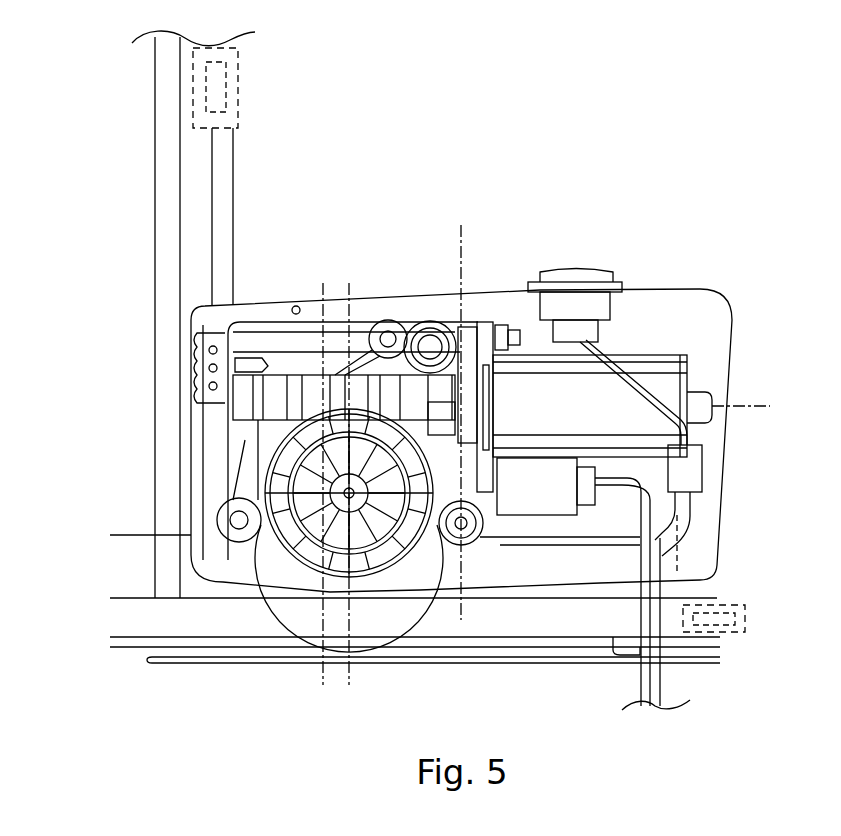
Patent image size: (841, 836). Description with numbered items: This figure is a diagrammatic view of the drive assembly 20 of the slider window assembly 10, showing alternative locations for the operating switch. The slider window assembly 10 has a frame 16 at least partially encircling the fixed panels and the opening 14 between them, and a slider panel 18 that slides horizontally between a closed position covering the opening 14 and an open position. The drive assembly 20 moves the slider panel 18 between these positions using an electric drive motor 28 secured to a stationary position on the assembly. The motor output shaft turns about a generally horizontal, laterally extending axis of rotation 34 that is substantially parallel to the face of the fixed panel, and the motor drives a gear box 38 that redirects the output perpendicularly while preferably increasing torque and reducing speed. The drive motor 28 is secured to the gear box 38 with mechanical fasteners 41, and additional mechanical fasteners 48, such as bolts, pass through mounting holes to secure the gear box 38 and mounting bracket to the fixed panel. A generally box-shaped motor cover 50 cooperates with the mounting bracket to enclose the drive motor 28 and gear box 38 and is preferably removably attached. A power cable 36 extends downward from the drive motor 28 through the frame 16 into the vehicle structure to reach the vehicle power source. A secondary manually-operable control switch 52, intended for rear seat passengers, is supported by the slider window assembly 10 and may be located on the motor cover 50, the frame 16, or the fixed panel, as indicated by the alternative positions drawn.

The slider window assembly 10 is at (487, 126).
The opening 14 is at (180, 240).
The frame 16 is at (123, 658).
The slider panel 18 is at (125, 109).
The drive assembly 20 is at (663, 353).
The electric drive motor 28 is at (688, 355).
The axis of rotation 34 is at (753, 407).
The power cable 36 is at (665, 684).
The gear box 38 is at (383, 323).
The mechanical fasteners 41 is at (521, 335).
The mechanical fasteners 48 is at (392, 338).
The motor cover 50 is at (722, 468).
The secondary control switch 52 is at (240, 108).